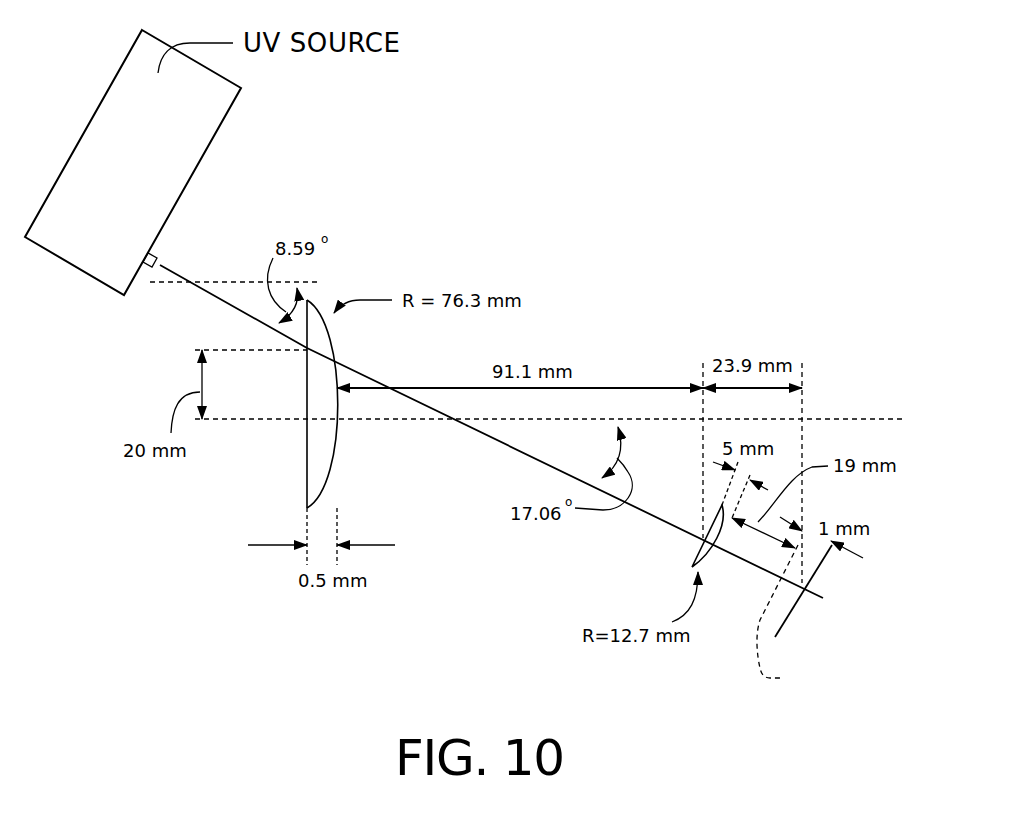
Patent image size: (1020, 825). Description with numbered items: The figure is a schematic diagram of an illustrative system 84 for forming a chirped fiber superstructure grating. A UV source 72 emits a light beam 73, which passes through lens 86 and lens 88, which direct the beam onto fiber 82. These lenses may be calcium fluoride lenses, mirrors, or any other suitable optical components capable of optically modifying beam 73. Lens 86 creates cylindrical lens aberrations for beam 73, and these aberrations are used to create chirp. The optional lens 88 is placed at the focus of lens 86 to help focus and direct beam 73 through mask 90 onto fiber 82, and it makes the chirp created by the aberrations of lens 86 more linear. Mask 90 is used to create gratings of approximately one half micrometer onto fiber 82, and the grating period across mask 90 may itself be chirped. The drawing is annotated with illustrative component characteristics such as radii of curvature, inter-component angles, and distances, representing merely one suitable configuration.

The UV source 72 is at (214, 135).
The light beam 73 is at (162, 267).
The fiber 82 is at (818, 567).
The system 84 is at (662, 144).
The lens 86 is at (313, 465).
The lens 88 is at (697, 557).
The mask 90 is at (788, 624).